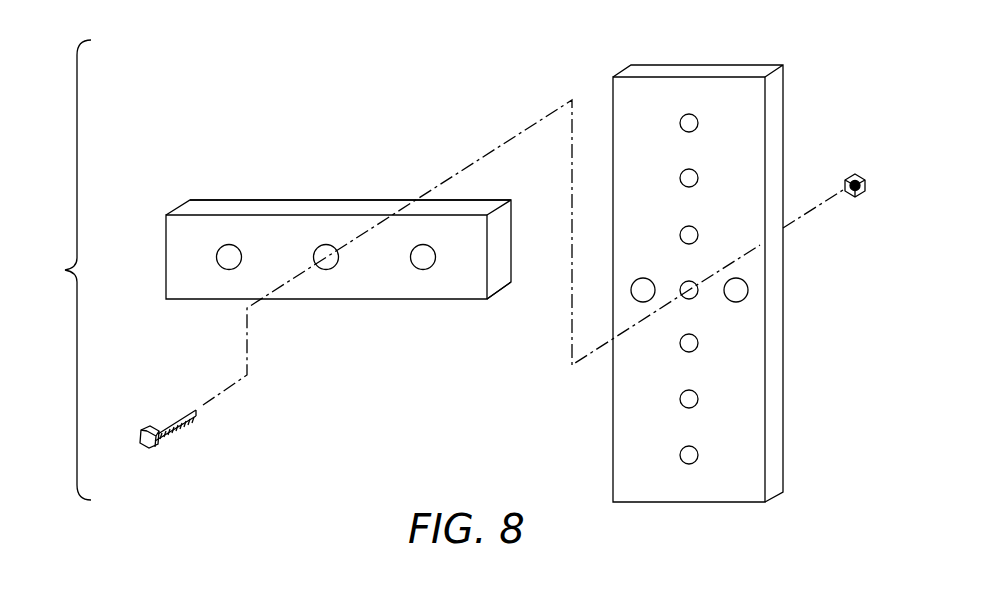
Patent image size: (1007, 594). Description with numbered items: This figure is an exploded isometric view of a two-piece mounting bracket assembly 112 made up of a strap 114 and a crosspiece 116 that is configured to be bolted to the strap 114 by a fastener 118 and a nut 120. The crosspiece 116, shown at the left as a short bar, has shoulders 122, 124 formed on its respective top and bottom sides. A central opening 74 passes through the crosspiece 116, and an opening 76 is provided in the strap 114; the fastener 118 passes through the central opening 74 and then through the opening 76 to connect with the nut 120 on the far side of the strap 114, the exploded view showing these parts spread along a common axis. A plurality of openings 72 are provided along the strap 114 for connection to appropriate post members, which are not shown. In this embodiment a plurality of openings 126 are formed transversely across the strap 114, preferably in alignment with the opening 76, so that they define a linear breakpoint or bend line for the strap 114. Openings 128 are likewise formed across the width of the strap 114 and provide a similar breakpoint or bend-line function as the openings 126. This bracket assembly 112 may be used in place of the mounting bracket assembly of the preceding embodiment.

The mounting bracket assembly 112 is at (537, 78).
The strap 114 is at (786, 138).
The crosspiece 116 is at (218, 198).
The fastener 118 is at (185, 425).
The nut 120 is at (855, 172).
The shoulder 122 is at (472, 203).
The shoulder 124 is at (500, 293).
The openings 126 is at (642, 279).
The openings 128 is at (229, 259).
The openings 72 is at (688, 171).
The central opening 74 is at (327, 261).
The opening 76 is at (694, 297).